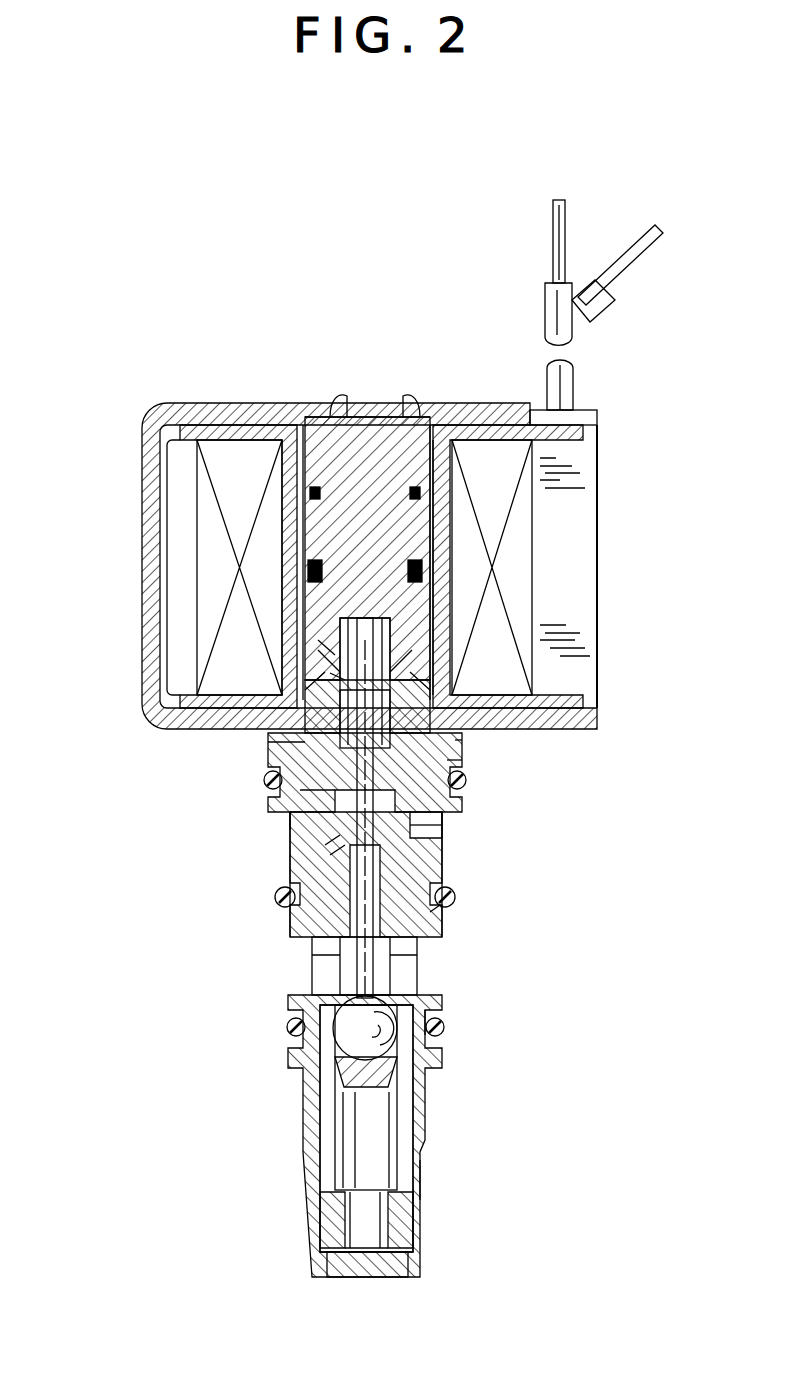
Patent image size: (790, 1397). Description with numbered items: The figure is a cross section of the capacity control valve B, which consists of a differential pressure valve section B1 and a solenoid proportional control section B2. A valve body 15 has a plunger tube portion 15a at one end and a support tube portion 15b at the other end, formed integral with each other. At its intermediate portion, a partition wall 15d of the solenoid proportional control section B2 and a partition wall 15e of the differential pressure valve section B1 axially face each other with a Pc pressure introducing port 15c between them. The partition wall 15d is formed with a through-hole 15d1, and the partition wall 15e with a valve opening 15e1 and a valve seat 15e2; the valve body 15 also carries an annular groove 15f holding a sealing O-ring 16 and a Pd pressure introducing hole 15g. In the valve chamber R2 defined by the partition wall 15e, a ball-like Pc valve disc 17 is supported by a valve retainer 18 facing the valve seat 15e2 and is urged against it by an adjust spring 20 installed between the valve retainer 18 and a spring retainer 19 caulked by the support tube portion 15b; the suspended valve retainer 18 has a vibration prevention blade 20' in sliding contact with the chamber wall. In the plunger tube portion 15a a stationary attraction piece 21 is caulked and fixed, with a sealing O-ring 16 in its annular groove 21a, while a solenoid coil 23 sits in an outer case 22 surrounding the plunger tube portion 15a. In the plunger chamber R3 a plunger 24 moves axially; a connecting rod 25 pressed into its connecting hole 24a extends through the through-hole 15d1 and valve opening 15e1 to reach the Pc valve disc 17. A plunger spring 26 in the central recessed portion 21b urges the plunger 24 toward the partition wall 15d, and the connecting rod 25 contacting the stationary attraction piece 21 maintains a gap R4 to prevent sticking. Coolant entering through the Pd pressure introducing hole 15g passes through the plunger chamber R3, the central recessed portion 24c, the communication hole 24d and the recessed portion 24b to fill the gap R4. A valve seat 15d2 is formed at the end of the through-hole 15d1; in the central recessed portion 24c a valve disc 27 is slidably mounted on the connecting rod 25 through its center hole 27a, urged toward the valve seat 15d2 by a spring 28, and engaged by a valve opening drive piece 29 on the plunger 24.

The capacity control valve B is at (371, 181).
The differential pressure valve section B1 is at (545, 1152).
The solenoid proportional control section B2 is at (585, 775).
The valve body 15 is at (255, 920).
The plunger tube portion 15a is at (432, 445).
The support tube portion 15b is at (440, 1168).
The Pc pressure introducing port 15c is at (312, 965).
The partition wall 15d is at (300, 930).
The through-hole 15d1 is at (445, 882).
The valve seat 15d2 is at (445, 815).
The partition wall 15e is at (290, 995).
The valve opening 15e1 is at (442, 975).
The valve seat 15e2 is at (442, 1010).
The annular groove 15f is at (290, 812).
The Pd pressure introducing hole 15g is at (442, 828).
The sealing O-ring 16 is at (440, 574).
The Pc valve disc 17 is at (442, 1055).
The valve retainer 18 is at (442, 1100).
The spring retainer 19 is at (442, 1240).
The adjust spring 20 is at (434, 1097).
The vibration prevention blade 20' is at (432, 1043).
The stationary attraction piece 21 is at (332, 447).
The annular groove 21a is at (440, 547).
The central recessed portion 21b is at (440, 600).
The outer case 22 is at (150, 585).
The solenoid coil 23 is at (205, 512).
The plunger 24 is at (295, 770).
The connecting hole 24a is at (268, 742).
The recessed portion 24b is at (305, 690).
The central recessed portion 24c is at (300, 795).
The communication hole 24d is at (440, 677).
The connecting rod 25 is at (327, 663).
The plunger spring 26 is at (318, 644).
The valve disc 27 is at (315, 830).
The center hole 27a is at (462, 775).
The spring 28 is at (465, 745).
The valve opening drive piece 29 is at (325, 845).
The valve chamber R2 is at (295, 1040).
The plunger chamber R3 is at (330, 855).
The gap R4 is at (440, 653).